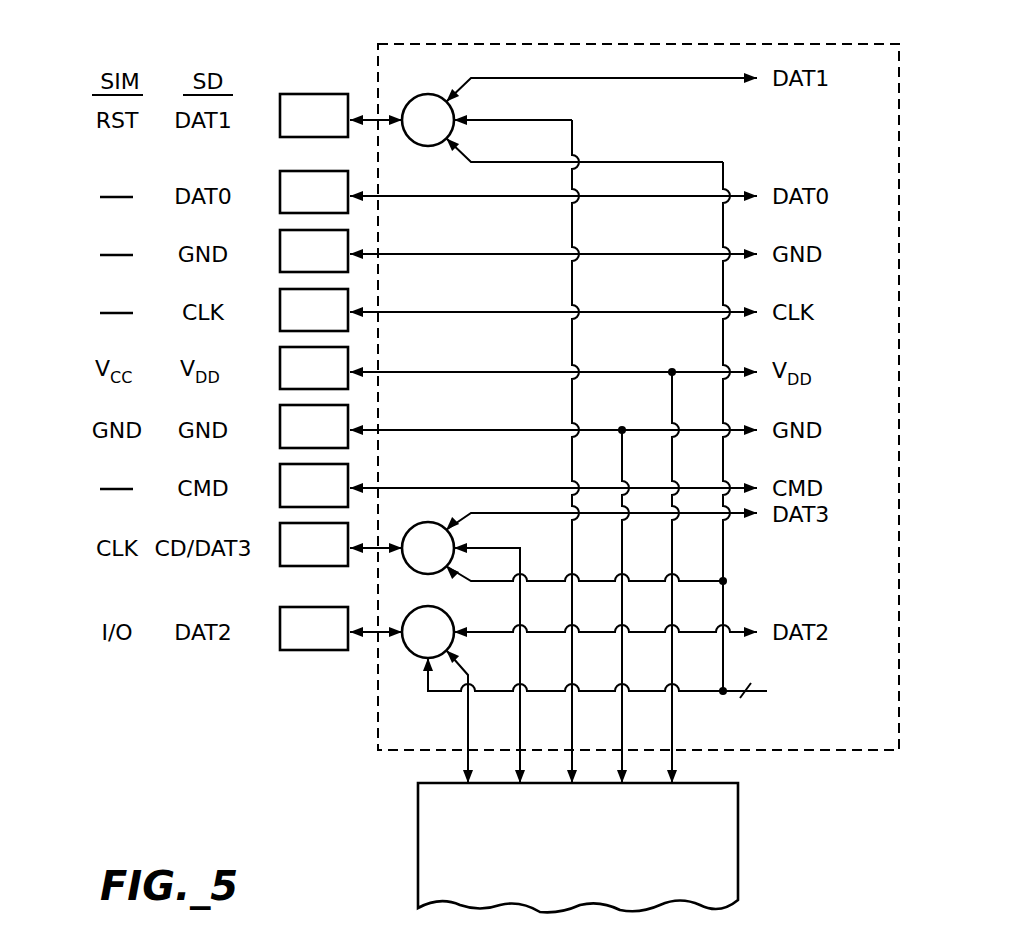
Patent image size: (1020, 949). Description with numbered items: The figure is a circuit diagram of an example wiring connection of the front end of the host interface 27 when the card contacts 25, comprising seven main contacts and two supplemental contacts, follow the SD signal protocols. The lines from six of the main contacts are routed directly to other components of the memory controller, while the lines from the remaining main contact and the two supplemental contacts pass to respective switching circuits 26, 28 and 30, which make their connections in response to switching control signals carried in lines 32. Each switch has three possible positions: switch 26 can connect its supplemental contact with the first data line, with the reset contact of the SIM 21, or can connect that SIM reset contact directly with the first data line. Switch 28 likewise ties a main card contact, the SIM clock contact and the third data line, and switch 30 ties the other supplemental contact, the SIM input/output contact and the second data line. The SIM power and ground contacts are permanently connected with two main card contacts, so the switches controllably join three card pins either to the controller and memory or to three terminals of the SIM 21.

The SIM 21 is at (740, 807).
The card contacts 25 is at (313, 711).
The switching circuit 26 is at (428, 94).
The host interface 27 is at (890, 226).
The switch 28 is at (428, 522).
The switch 30 is at (428, 606).
The lines 32 is at (765, 691).